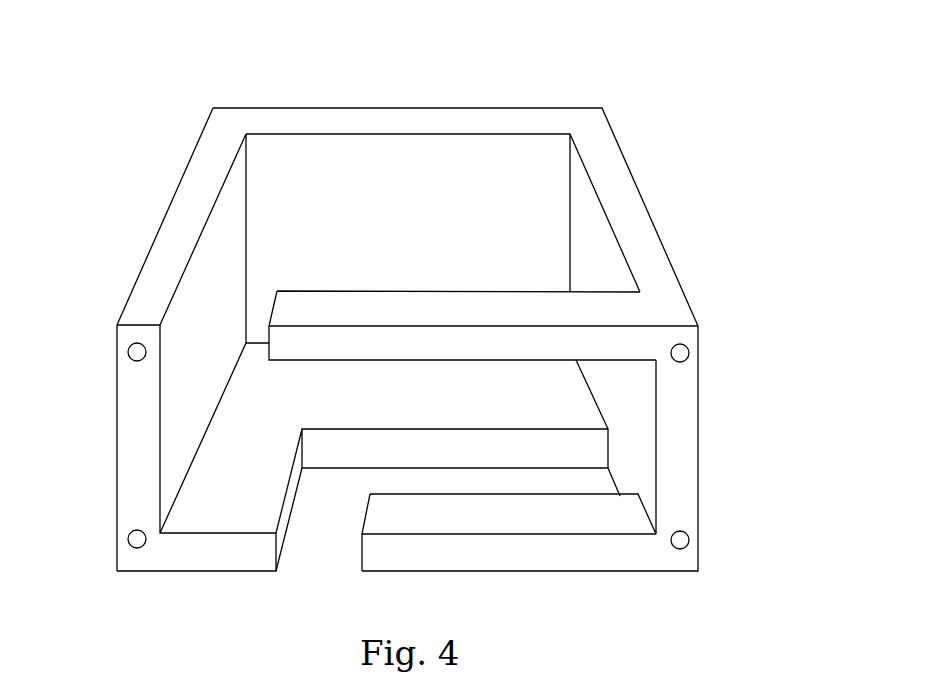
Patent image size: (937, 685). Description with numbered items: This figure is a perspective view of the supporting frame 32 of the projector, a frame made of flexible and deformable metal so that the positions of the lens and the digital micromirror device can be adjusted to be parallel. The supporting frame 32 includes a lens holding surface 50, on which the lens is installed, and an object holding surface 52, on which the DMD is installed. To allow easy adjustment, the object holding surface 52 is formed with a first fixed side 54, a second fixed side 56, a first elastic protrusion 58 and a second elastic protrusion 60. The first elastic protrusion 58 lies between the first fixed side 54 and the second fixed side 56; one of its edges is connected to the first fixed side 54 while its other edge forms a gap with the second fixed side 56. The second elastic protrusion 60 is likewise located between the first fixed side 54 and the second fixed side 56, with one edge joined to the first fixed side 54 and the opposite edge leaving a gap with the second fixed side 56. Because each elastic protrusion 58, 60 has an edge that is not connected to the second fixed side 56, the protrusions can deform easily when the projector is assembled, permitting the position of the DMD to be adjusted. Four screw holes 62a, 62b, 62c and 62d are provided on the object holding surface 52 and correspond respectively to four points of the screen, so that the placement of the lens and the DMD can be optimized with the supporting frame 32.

The supporting frame 32 is at (788, 145).
The lens holding surface 50 is at (430, 108).
The object holding surface 52 is at (117, 437).
The first fixed side 54 is at (683, 455).
The second fixed side 56 is at (130, 497).
The first elastic protrusion 58 is at (395, 343).
The second elastic protrusion 60 is at (540, 560).
The screw hole 62a is at (689, 346).
The screw hole 62b is at (128, 345).
The screw hole 62c is at (689, 533).
The screw hole 62d is at (129, 532).